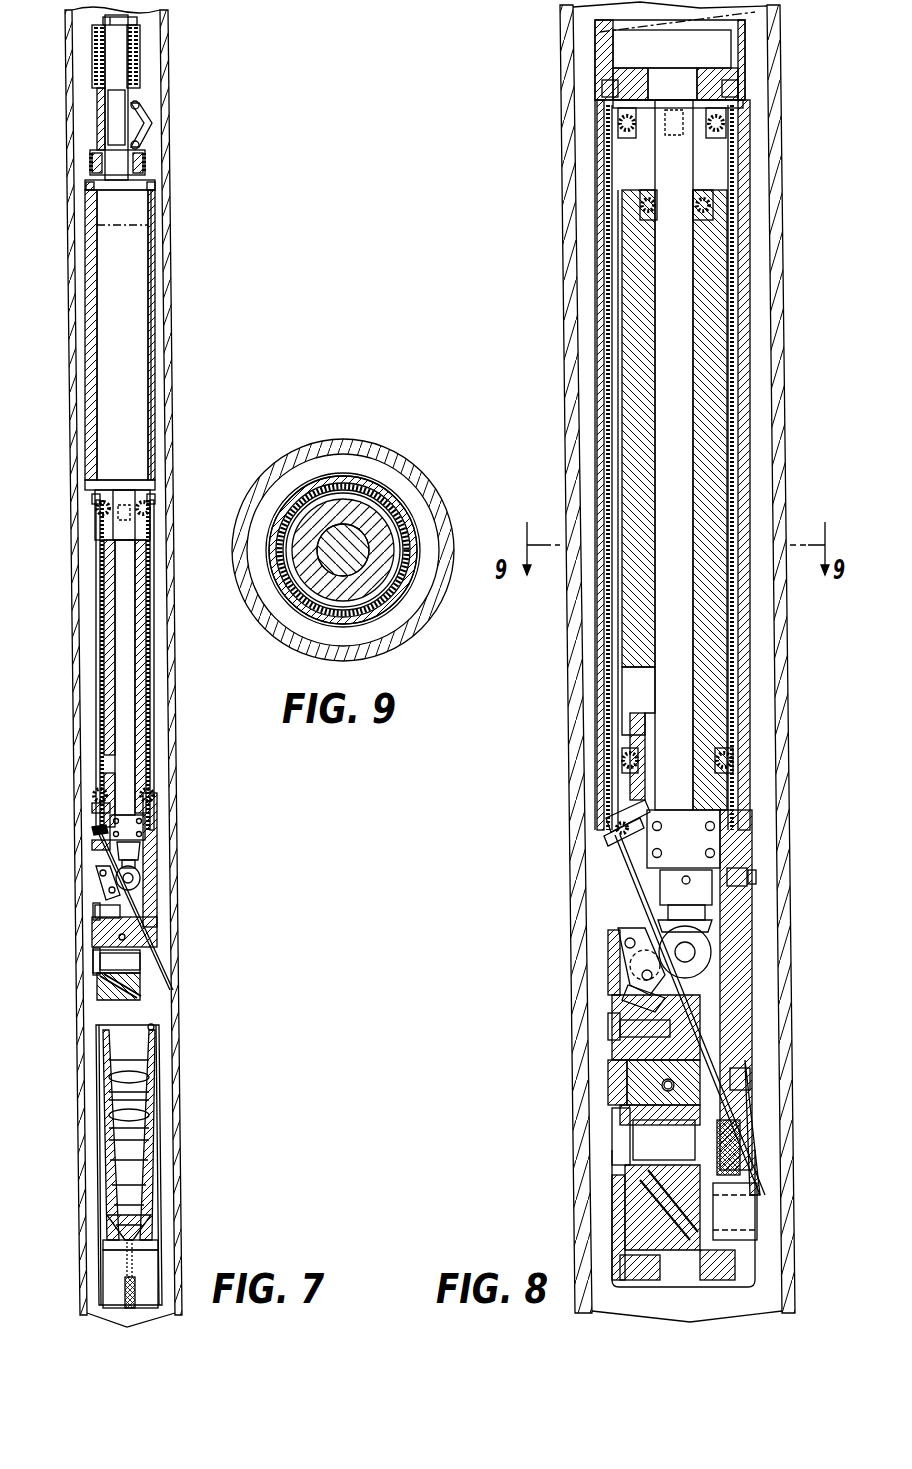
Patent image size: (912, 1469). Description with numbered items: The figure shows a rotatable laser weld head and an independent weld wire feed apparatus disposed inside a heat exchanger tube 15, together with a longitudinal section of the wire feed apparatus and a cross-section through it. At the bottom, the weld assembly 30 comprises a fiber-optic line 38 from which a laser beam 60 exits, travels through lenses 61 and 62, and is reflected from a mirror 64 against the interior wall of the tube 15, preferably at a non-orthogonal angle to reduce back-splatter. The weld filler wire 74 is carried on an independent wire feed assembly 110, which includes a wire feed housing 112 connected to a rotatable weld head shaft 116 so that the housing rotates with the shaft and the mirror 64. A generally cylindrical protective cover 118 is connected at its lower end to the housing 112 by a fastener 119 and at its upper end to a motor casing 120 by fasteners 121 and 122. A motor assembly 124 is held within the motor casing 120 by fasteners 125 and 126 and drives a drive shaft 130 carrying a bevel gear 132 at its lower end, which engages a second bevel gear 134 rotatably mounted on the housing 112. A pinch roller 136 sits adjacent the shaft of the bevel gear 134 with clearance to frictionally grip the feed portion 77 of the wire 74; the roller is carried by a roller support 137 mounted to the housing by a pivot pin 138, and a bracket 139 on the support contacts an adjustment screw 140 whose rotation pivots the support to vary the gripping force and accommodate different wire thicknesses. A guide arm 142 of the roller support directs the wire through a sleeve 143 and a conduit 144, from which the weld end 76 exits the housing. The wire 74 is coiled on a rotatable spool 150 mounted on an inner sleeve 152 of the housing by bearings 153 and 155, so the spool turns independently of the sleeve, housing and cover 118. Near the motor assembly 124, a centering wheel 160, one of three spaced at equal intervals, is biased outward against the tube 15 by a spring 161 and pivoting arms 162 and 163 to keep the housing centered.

In FIG. 7, the heat exchanger tube 15 is at (68, 318).
In FIG. 9, the heat exchanger tube 15 is at (338, 440).
In FIG. 8, the heat exchanger tube 15 is at (562, 308).
In FIG. 7, the weld assembly 30 is at (96, 1212).
In FIG. 7, the fiber-optic line 38 is at (130, 1310).
In FIG. 7, the laser beam 60 is at (160, 1010).
In FIG. 8, the laser beam 60 is at (770, 1256).
In FIG. 7, the lens 61 is at (110, 1116).
In FIG. 7, the lens 62 is at (110, 1077).
In FIG. 7, the mirror 64 is at (98, 995).
In FIG. 8, the mirror 64 is at (640, 1205).
In FIG. 7, the weld filler wire 74 is at (125, 683).
In FIG. 9, the weld filler wire 74 is at (372, 492).
In FIG. 8, the weld filler wire 74 is at (620, 372).
In FIG. 8, the weld end 76 is at (740, 1225).
In FIG. 7, the feed portion 77 is at (135, 910).
In FIG. 8, the feed portion 77 is at (640, 915).
In FIG. 7, the wire feed assembly 110 is at (160, 828).
In FIG. 8, the wire feed assembly 110 is at (762, 835).
In FIG. 7, the wire feed housing 112 is at (157, 908).
In FIG. 8, the wire feed housing 112 is at (745, 1025).
In FIG. 7, the rotatable weld head shaft 116 is at (95, 985).
In FIG. 8, the rotatable weld head shaft 116 is at (610, 1180).
In FIG. 7, the protective cover 118 is at (98, 605).
In FIG. 9, the protective cover 118 is at (398, 490).
In FIG. 8, the protective cover 118 is at (750, 425).
In FIG. 8, the fastener 119 is at (760, 880).
In FIG. 7, the motor casing 120 is at (153, 258).
In FIG. 8, the motor casing 120 is at (748, 45).
In FIG. 8, the fastener 121 is at (600, 88).
In FIG. 8, the fastener 122 is at (740, 90).
In FIG. 7, the motor assembly 124 is at (125, 298).
In FIG. 8, the motor assembly 124 is at (710, 40).
In FIG. 7, the fastener 125 is at (85, 190).
In FIG. 7, the fastener 126 is at (155, 190).
In FIG. 7, the drive shaft 130 is at (122, 676).
In FIG. 9, the drive shaft 130 is at (330, 548).
In FIG. 8, the drive shaft 130 is at (690, 364).
In FIG. 7, the bevel gear 132 is at (140, 858).
In FIG. 8, the bevel gear 132 is at (712, 928).
In FIG. 7, the bevel gear 134 is at (140, 880).
In FIG. 8, the bevel gear 134 is at (712, 955).
In FIG. 7, the pinch roller 136 is at (96, 890).
In FIG. 8, the pinch roller 136 is at (642, 975).
In FIG. 8, the roller support 137 is at (655, 1000).
In FIG. 8, the pivot pin 138 is at (625, 943).
In FIG. 8, the bracket 139 is at (622, 1038).
In FIG. 8, the adjustment screw 140 is at (605, 1027).
In FIG. 8, the guide arm 142 is at (640, 1085).
In FIG. 8, the sleeve 143 is at (604, 840).
In FIG. 8, the conduit 144 is at (755, 1122).
In FIG. 7, the rotatable spool 150 is at (101, 641).
In FIG. 9, the rotatable spool 150 is at (405, 528).
In FIG. 8, the rotatable spool 150 is at (735, 380).
In FIG. 9, the inner sleeve 152 is at (292, 490).
In FIG. 8, the inner sleeve 152 is at (720, 496).
In FIG. 8, the bearing 153 is at (618, 128).
In FIG. 8, the bearing 155 is at (620, 760).
In FIG. 7, the centering wheel 160 is at (158, 118).
In FIG. 7, the spring 161 is at (138, 62).
In FIG. 7, the pivoting arm 162 is at (140, 105).
In FIG. 7, the pivoting arm 163 is at (140, 146).